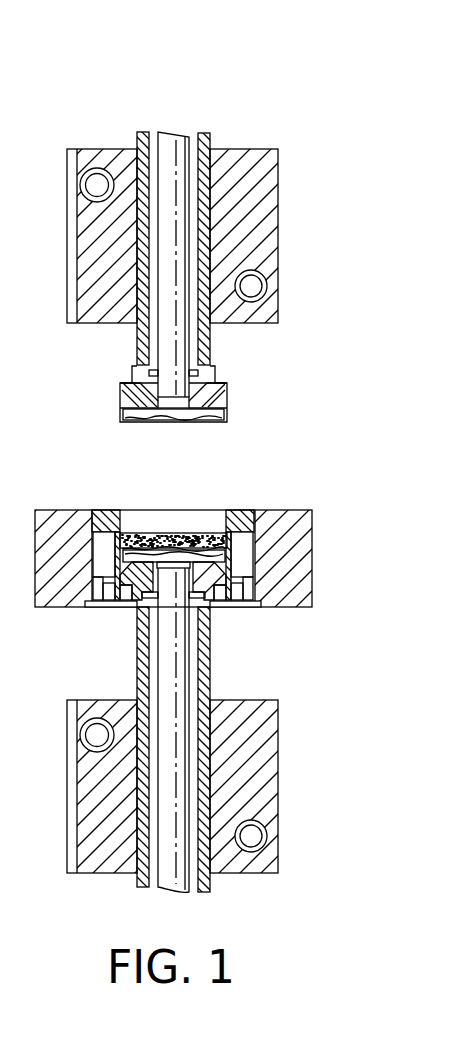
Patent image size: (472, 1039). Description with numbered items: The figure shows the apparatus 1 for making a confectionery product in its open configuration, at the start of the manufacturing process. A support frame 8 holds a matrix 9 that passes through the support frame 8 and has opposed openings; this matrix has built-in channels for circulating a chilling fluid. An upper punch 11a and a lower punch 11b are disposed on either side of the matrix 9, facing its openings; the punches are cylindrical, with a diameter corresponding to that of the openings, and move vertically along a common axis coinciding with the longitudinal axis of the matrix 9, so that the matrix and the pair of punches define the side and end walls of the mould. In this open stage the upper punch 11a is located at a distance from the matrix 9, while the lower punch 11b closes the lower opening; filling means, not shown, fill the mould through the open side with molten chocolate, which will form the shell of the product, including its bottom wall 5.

The apparatus 1 is at (82, 98).
The bottom wall 5 is at (145, 533).
The support frame 8 is at (55, 510).
The matrix 9 is at (243, 522).
The upper punch 11a is at (121, 418).
The lower punch 11b is at (167, 652).